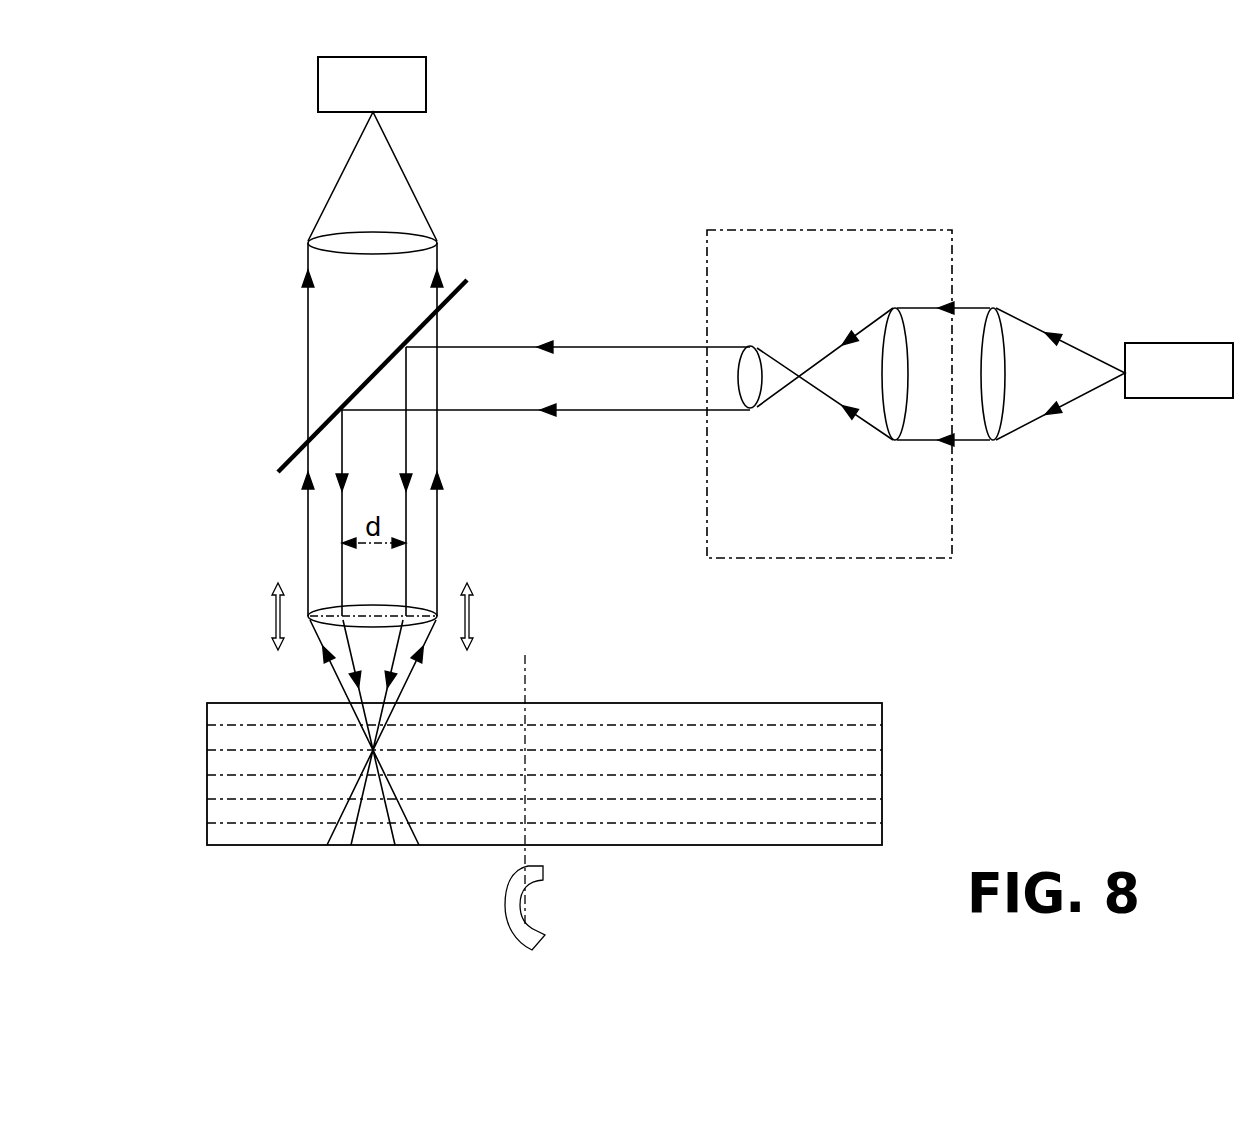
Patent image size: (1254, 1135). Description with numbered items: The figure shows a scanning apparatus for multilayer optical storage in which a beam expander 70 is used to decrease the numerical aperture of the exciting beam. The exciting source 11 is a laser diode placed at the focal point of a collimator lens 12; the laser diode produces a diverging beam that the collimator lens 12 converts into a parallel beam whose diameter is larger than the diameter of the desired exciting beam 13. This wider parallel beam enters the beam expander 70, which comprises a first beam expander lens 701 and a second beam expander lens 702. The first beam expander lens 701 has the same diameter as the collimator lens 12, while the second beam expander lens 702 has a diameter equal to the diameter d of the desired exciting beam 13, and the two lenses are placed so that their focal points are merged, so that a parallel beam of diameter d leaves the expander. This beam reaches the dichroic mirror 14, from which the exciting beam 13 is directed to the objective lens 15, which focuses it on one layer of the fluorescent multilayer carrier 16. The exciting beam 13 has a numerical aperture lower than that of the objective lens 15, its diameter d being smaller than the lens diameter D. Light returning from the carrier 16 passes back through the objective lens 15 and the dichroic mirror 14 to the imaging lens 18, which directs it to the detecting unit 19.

The exciting source 11 is at (1185, 343).
The collimator lens 12 is at (993, 434).
The exciting beam 13 is at (407, 437).
The dichroic mirror 14 is at (292, 455).
The objective lens 15 is at (437, 617).
The fluorescent multilayer carrier 16 is at (882, 785).
The imaging lens 18 is at (408, 243).
The detecting unit 19 is at (426, 84).
The beam expander 70 is at (785, 230).
The first beam expander lens 701 is at (895, 415).
The second beam expander lens 702 is at (752, 385).